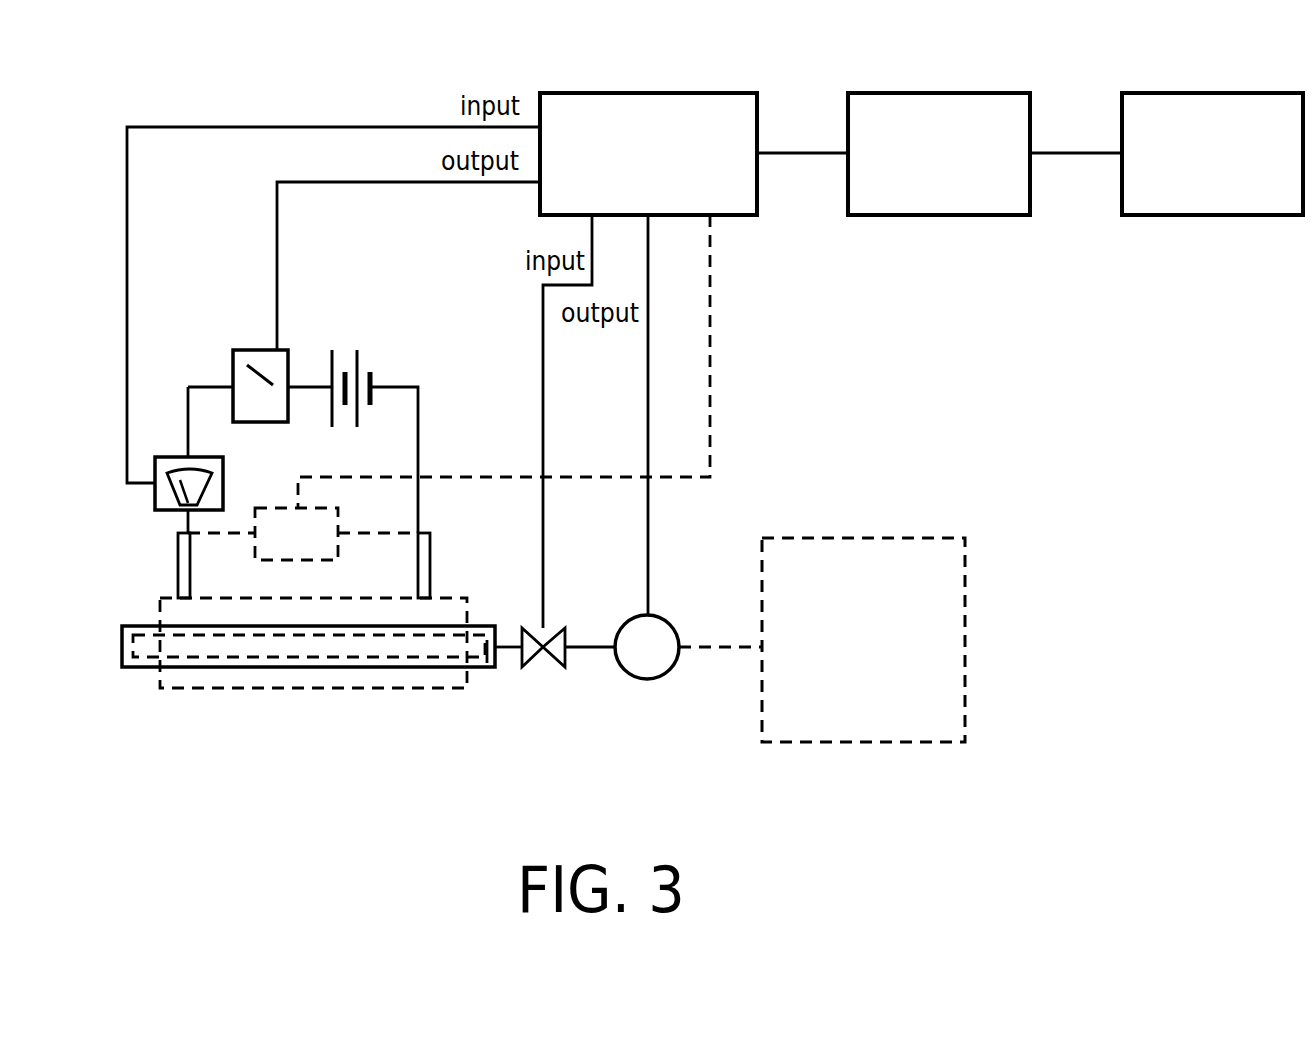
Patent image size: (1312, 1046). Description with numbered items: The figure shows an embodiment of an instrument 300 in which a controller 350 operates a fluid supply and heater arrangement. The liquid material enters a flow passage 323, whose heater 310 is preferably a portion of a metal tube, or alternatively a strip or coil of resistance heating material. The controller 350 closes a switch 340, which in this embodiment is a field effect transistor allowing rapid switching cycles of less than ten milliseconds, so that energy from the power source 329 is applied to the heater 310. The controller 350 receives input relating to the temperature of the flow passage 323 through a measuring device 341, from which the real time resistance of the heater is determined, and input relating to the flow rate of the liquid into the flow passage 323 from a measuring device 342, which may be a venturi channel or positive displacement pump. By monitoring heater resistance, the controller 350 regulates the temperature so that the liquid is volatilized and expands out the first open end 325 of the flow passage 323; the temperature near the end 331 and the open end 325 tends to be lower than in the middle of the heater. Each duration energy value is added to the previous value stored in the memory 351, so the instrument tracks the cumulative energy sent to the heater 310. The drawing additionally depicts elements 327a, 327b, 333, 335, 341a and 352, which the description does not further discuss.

The electrodeposition system 300 is at (878, 385).
The heater 310 is at (202, 688).
The flow passage 323 is at (300, 645).
The first open end 325 is at (122, 647).
The first electrode 327a is at (178, 578).
The second electrode 327b is at (418, 578).
The power source 329 is at (357, 362).
The end 331 is at (487, 663).
The source of liquid material 333 is at (895, 742).
The pump 335 is at (645, 680).
The switch 340 is at (250, 350).
The measuring device 341 is at (155, 500).
The sensor 341a is at (296, 534).
The measuring device 342 is at (548, 633).
The controller 350 is at (713, 93).
The memory 351 is at (990, 93).
The display 352 is at (1263, 93).